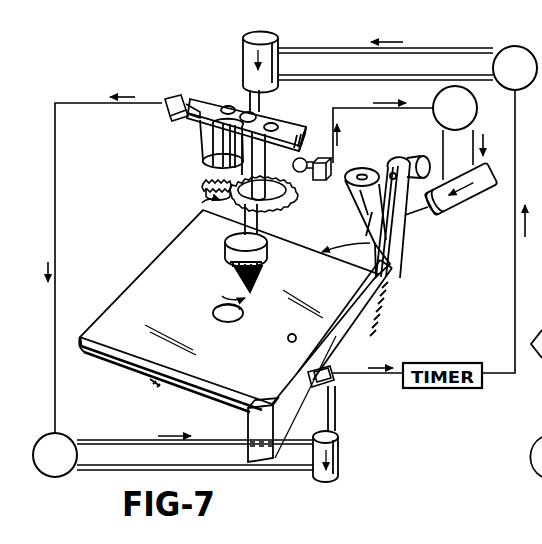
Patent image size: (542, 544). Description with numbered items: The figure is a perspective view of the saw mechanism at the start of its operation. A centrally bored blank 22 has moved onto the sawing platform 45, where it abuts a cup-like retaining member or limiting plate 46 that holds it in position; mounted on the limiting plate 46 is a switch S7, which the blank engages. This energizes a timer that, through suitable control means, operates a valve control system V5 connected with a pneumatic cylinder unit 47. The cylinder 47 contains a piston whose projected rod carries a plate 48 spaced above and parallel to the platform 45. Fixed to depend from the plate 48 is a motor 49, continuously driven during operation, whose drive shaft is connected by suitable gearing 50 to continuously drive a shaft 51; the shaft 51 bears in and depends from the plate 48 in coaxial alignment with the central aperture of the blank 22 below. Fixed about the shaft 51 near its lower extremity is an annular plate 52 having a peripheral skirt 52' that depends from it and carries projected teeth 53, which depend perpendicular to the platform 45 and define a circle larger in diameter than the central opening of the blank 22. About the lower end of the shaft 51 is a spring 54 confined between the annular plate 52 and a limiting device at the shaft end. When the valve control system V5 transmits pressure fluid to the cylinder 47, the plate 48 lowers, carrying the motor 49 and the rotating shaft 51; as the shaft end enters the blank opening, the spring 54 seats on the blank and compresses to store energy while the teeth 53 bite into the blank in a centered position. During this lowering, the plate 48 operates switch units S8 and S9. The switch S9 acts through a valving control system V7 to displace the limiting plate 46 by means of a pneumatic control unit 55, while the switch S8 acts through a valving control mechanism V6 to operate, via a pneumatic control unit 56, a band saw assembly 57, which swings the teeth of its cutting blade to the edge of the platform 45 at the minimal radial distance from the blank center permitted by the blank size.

The blank 22 is at (120, 303).
The sawing platform 45 is at (153, 381).
The limiting plate 46 is at (388, 307).
The pneumatic cylinder unit 47 is at (247, 54).
The plate 48 is at (270, 119).
The motor 49 is at (204, 148).
The gearing 50 is at (203, 184).
The shaft 51 is at (283, 172).
The annular plate 52 is at (204, 187).
The peripheral skirt 52' is at (324, 237).
The teeth 53 is at (223, 257).
The spring 54 is at (223, 280).
The pneumatic control unit 55 is at (340, 448).
The pneumatic control unit 56 is at (465, 208).
The band saw assembly 57 is at (410, 244).
The switch S7 is at (308, 378).
The switch unit S8 is at (332, 176).
The switch unit S9 is at (177, 95).
The valve control system V5 is at (515, 68).
The valving control mechanism V6 is at (455, 108).
The valving control system V7 is at (55, 455).